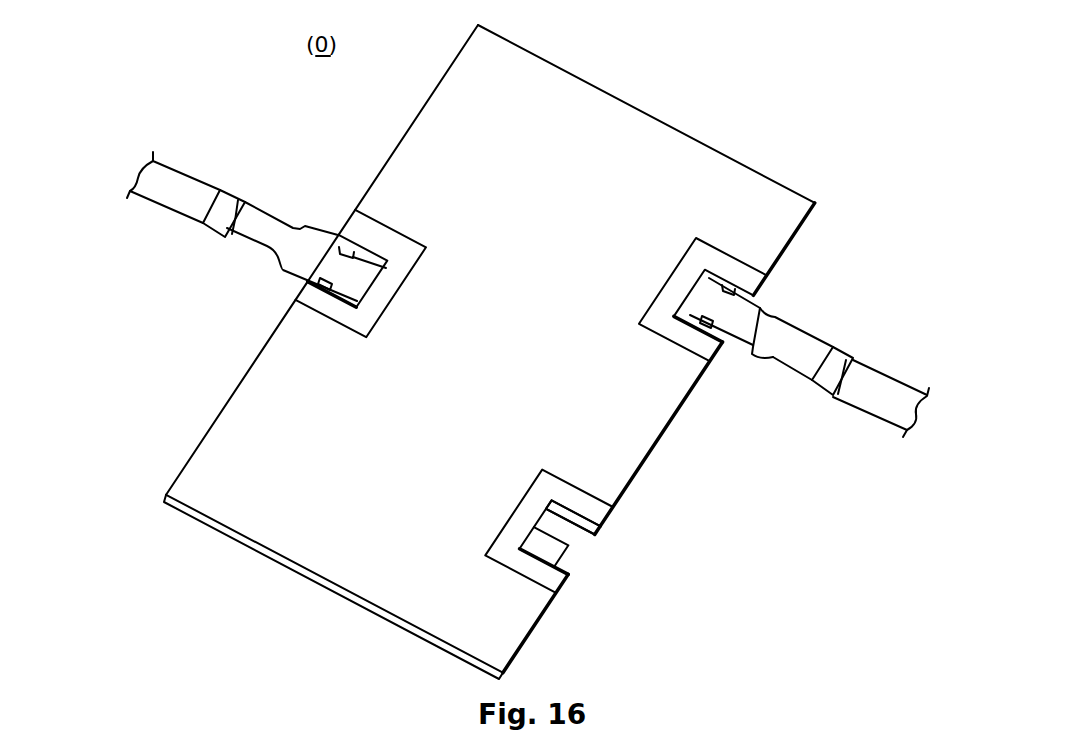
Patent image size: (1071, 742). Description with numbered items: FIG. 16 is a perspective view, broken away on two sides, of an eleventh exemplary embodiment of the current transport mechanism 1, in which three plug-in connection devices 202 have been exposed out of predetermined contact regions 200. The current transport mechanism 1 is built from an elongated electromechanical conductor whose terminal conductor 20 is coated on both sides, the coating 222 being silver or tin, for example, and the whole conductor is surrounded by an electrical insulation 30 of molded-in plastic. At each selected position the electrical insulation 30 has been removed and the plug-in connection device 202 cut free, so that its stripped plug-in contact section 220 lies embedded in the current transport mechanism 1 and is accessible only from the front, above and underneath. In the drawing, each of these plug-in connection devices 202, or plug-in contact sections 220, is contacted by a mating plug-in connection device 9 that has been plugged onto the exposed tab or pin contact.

The current transport mechanism 1 is at (794, 99).
The electrical insulation 30 is at (632, 158).
The mating plug-in connection device 9 is at (322, 252).
The terminal conductor 20 is at (571, 411).
The predetermined contact region 200 is at (571, 411).
The plug-in connection device 202 is at (571, 411).
The plug-in contact section 220 is at (592, 561).
The coating 222 is at (558, 547).